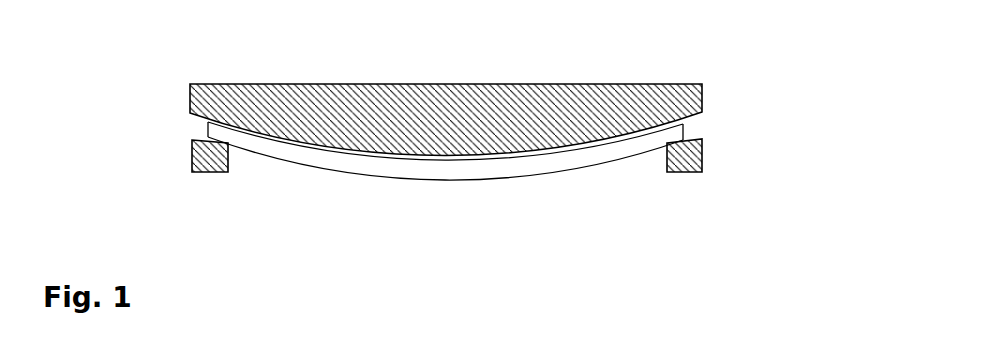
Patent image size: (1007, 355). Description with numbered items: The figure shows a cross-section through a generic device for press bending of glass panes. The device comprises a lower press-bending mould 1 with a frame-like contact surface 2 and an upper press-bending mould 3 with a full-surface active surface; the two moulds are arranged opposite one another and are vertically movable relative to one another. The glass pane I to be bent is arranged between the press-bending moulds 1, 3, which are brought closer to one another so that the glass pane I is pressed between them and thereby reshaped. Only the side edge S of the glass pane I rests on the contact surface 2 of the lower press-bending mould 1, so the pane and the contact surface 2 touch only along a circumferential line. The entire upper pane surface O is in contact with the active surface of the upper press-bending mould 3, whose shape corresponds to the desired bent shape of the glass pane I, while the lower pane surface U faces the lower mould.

The lower press-bending mould 1 is at (702, 170).
The contact surface 2 is at (423, 145).
The upper press-bending mould 3 is at (665, 90).
The upper pane surface O is at (412, 157).
The lower pane surface U is at (368, 178).
The side edge S is at (207, 130).
The glass pane I is at (548, 165).